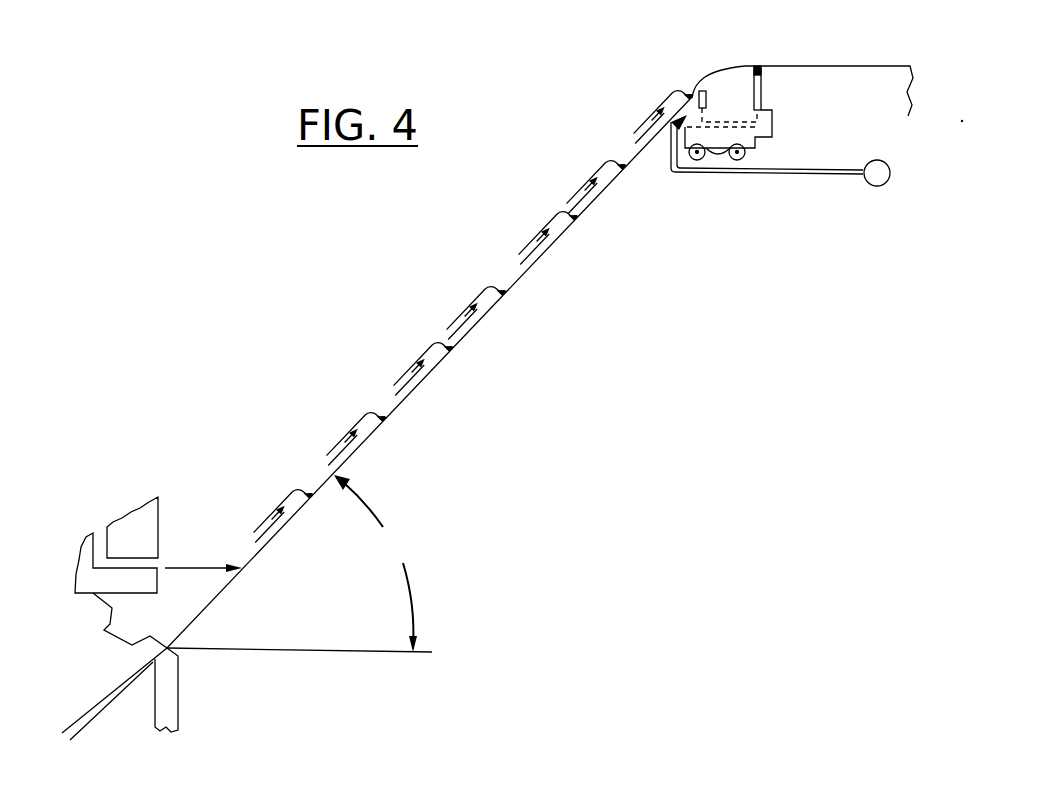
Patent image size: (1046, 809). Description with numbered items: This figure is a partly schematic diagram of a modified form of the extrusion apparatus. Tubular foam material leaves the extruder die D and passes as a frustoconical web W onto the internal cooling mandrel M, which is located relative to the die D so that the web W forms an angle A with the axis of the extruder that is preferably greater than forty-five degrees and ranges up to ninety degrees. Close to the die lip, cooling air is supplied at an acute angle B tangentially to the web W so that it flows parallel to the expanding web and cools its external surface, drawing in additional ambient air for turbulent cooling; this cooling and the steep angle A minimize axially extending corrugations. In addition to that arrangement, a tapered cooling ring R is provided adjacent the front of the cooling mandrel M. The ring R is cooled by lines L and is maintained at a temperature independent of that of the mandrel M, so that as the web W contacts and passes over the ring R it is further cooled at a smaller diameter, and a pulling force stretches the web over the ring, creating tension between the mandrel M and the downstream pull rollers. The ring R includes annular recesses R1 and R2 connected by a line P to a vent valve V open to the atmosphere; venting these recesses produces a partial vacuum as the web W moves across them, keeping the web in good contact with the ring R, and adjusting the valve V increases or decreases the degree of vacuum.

The annular recess R1 is at (758, 66).
The annular recess R2 is at (702, 90).
The tapered cooling ring R is at (757, 138).
The lines L is at (736, 160).
The line P is at (668, 155).
The vent valve V is at (877, 173).
The internal cooling mandrel M is at (799, 211).
The web W is at (426, 374).
The angle A is at (375, 563).
The acute angle B is at (165, 528).
The extruder die D is at (178, 698).